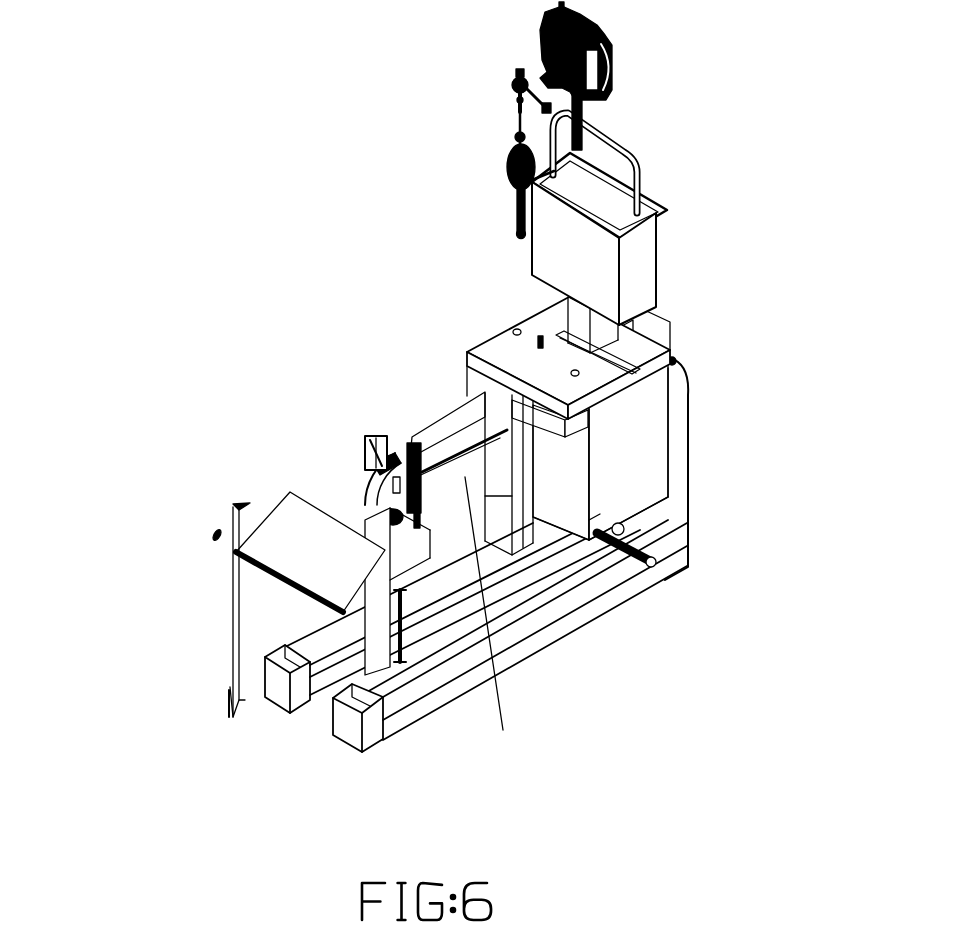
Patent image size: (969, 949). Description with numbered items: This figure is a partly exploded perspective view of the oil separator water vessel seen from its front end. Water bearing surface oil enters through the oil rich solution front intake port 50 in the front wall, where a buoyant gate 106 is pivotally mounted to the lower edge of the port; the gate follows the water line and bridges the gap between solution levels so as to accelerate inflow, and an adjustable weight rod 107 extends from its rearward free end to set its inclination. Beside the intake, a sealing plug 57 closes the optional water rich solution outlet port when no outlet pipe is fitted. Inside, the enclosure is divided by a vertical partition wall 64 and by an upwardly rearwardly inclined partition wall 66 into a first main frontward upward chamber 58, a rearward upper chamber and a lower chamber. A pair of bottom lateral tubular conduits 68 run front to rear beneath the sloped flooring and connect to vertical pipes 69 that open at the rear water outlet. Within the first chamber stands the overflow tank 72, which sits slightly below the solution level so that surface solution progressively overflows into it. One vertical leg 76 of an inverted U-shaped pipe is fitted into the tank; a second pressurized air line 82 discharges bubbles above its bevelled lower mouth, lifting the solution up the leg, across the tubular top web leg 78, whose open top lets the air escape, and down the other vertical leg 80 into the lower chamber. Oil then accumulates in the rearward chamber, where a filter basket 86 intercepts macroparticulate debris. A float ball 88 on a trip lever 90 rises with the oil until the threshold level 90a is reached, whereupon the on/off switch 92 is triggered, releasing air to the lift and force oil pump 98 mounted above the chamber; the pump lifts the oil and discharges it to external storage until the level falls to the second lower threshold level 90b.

The oil rich solution front intake port 50 is at (139, 531).
The sealing plug 57 is at (167, 662).
The first main frontward upward chamber 58 is at (324, 696).
The vertical partition wall 64 is at (591, 424).
The upwardly rearwardly inclined partition wall 66 is at (609, 499).
The bottom lateral tubular conduit 68 is at (610, 561).
The vertical pipe 69 is at (742, 468).
The overflow tank 72 is at (397, 591).
The vertical leg 76 is at (317, 461).
The tubular top web leg 78 is at (382, 401).
The vertical leg 80 is at (509, 470).
The second pressurized air line 82 is at (524, 601).
The filter basket 86 is at (683, 253).
The float ball 88 is at (439, 191).
The trip lever 90 is at (453, 153).
The threshold level 90a is at (424, 89).
The second lower threshold level 90b is at (464, 68).
The on/off switch 92 is at (623, 159).
The lift and force oil pump 98 is at (668, 76).
The buoyant gate 106 is at (310, 552).
The adjustable weight rod 107 is at (249, 593).